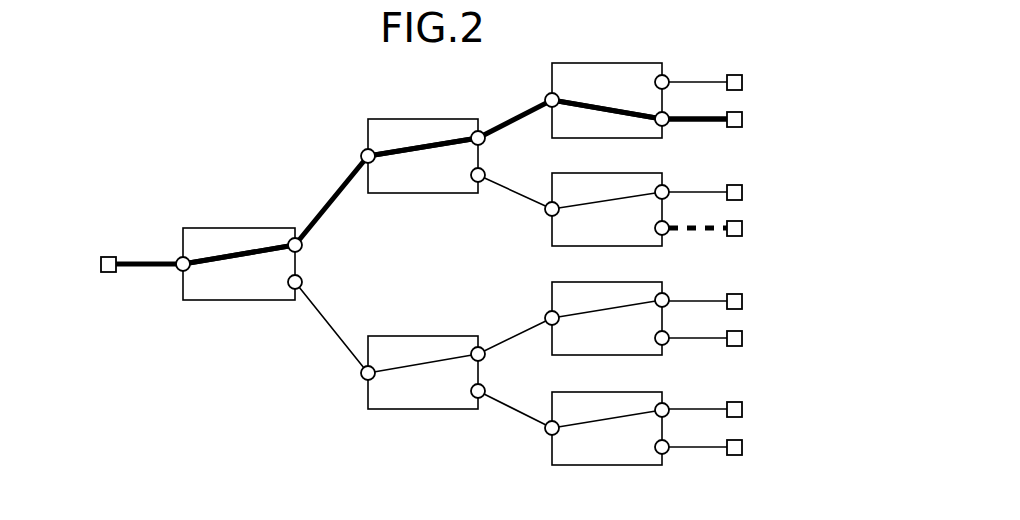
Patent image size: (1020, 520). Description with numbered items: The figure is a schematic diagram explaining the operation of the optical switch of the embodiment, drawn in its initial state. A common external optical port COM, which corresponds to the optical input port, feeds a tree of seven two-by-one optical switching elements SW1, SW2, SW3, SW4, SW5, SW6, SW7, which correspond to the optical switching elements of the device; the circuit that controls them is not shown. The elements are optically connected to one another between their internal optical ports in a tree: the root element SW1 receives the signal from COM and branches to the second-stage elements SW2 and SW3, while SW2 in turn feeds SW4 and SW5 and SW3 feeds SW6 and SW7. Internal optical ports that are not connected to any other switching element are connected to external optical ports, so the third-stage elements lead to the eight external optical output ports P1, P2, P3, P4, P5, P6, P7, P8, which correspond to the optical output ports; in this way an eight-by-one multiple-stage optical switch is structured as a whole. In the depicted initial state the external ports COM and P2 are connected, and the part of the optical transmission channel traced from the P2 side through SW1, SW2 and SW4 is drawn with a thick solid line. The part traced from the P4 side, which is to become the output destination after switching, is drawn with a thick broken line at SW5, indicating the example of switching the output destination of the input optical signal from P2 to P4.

The common external optical port COM is at (78, 265).
The optical switching element SW1 is at (239, 278).
The optical switching element SW2 is at (423, 170).
The optical switching element SW3 is at (423, 388).
The optical switching element SW4 is at (607, 115).
The optical switching element SW5 is at (607, 224).
The optical switching element SW6 is at (607, 333).
The optical switching element SW7 is at (607, 442).
The external optical output port P1 is at (732, 83).
The external optical output port P2 is at (732, 120).
The external optical output port P3 is at (732, 193).
The external optical output port P4 is at (732, 229).
The external optical output port P5 is at (732, 303).
The external optical output port P6 is at (732, 340).
The external optical output port P7 is at (732, 410).
The external optical output port P8 is at (732, 448).